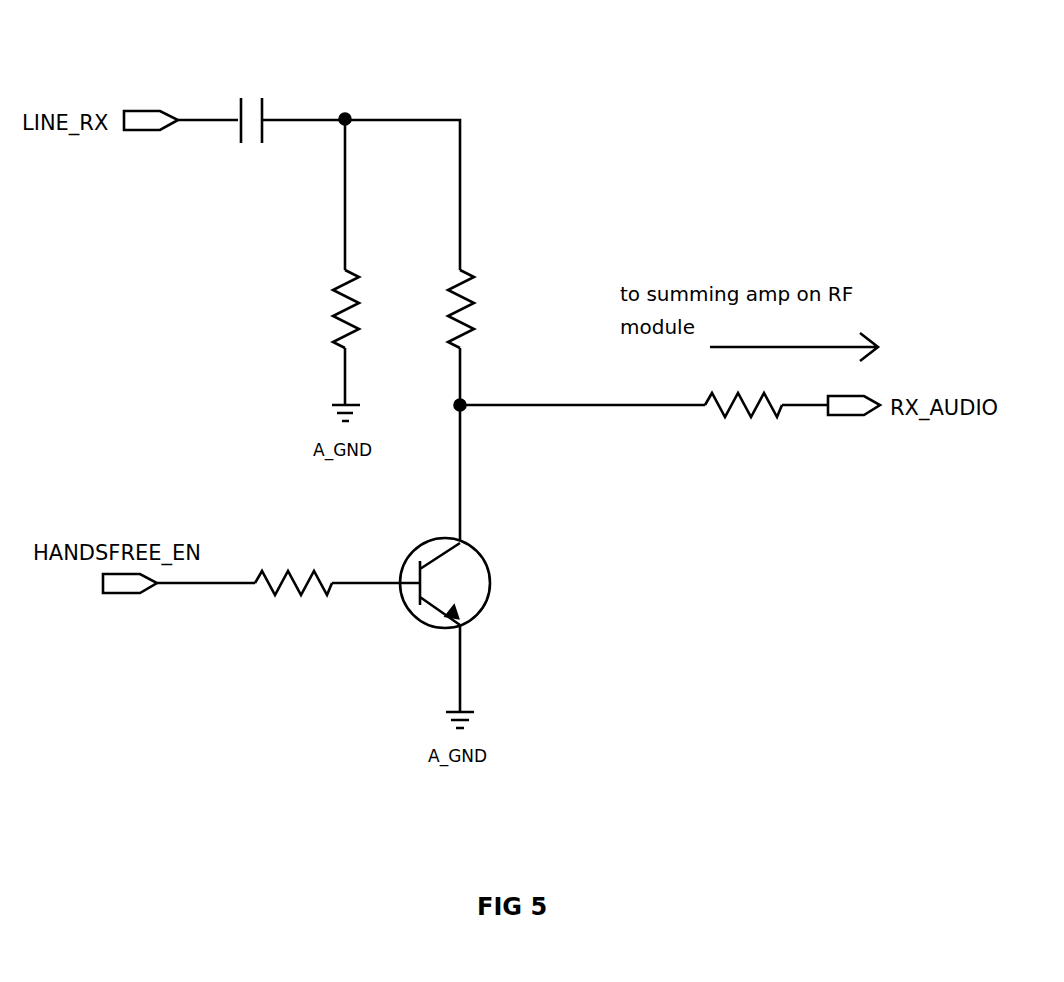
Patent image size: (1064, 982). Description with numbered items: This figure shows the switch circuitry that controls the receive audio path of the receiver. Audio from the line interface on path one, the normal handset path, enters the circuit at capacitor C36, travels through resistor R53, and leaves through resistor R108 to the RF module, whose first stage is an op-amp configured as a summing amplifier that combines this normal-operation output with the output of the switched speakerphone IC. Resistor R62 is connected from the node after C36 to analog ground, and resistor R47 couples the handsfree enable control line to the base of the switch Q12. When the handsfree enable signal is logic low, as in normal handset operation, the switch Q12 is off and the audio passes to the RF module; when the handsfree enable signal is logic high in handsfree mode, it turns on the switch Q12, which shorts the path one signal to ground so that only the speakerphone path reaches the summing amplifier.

The capacitor C36 is at (229, 88).
The resistor R62 is at (312, 309).
The resistor R53 is at (492, 309).
The resistor R108 is at (743, 425).
The resistor R47 is at (293, 620).
The switch Q12 is at (472, 583).